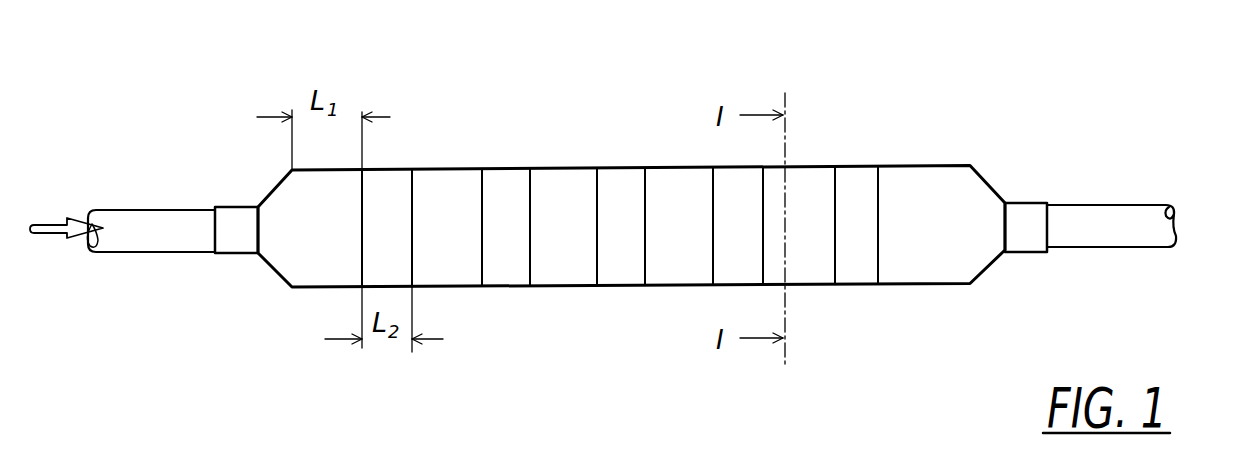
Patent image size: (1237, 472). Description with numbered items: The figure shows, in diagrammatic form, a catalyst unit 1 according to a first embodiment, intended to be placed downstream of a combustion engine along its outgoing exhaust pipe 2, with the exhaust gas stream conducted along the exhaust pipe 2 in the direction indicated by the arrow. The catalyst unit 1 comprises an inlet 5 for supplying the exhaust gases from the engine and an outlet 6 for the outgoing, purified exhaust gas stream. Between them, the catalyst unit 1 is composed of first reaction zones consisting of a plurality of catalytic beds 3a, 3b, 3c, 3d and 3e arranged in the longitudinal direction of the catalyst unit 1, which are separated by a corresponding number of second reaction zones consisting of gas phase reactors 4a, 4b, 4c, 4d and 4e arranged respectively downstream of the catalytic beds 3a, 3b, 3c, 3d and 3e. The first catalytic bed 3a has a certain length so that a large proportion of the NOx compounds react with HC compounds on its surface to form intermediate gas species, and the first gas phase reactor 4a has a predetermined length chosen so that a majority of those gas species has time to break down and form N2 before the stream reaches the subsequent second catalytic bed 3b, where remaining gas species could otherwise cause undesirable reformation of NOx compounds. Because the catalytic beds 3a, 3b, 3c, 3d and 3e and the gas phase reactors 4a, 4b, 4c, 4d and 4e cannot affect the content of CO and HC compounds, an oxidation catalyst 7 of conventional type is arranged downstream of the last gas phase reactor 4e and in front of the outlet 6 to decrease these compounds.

The catalyst unit 1 is at (277, 255).
The exhaust pipe 2 is at (127, 222).
The first catalytic bed 3a is at (327, 272).
The second catalytic bed 3b is at (437, 262).
The third catalytic bed 3c is at (565, 262).
The fourth catalytic bed 3d is at (680, 262).
The fifth catalytic bed 3e is at (800, 266).
The first gas phase reactor 4a is at (390, 190).
The second gas phase reactor 4b is at (512, 192).
The third gas phase reactor 4c is at (622, 185).
The fourth gas phase reactor 4d is at (733, 190).
The fifth gas phase reactor 4e is at (845, 190).
The inlet 5 is at (235, 218).
The outlet 6 is at (1028, 220).
The oxidation catalyst 7 is at (940, 192).